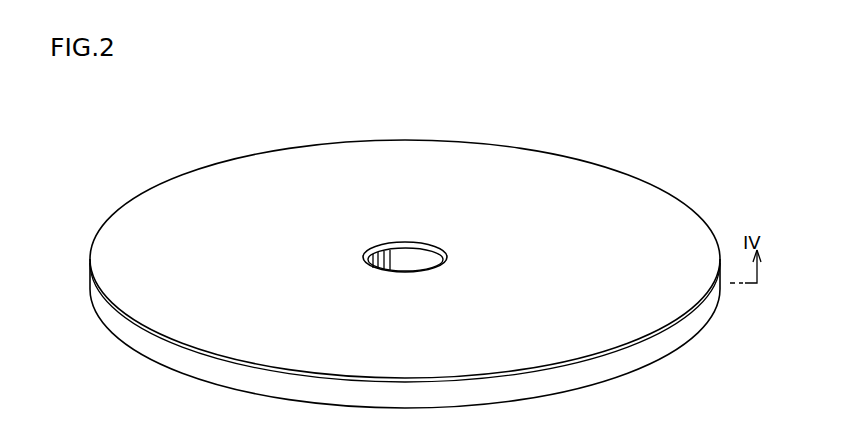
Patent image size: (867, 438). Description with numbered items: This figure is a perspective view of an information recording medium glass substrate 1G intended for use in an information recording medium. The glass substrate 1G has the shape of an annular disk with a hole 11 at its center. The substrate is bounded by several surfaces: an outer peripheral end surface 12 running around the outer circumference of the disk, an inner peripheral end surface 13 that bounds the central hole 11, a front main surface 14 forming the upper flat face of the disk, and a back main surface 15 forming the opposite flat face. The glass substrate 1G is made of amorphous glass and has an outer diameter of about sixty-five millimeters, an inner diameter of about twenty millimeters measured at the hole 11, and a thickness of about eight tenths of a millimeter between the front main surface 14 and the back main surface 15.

The information recording medium glass substrate 1G is at (582, 105).
The hole 11 is at (406, 258).
The outer peripheral end surface 12 is at (703, 323).
The inner peripheral end surface 13 is at (393, 263).
The front main surface 14 is at (609, 188).
The back main surface 15 is at (650, 367).